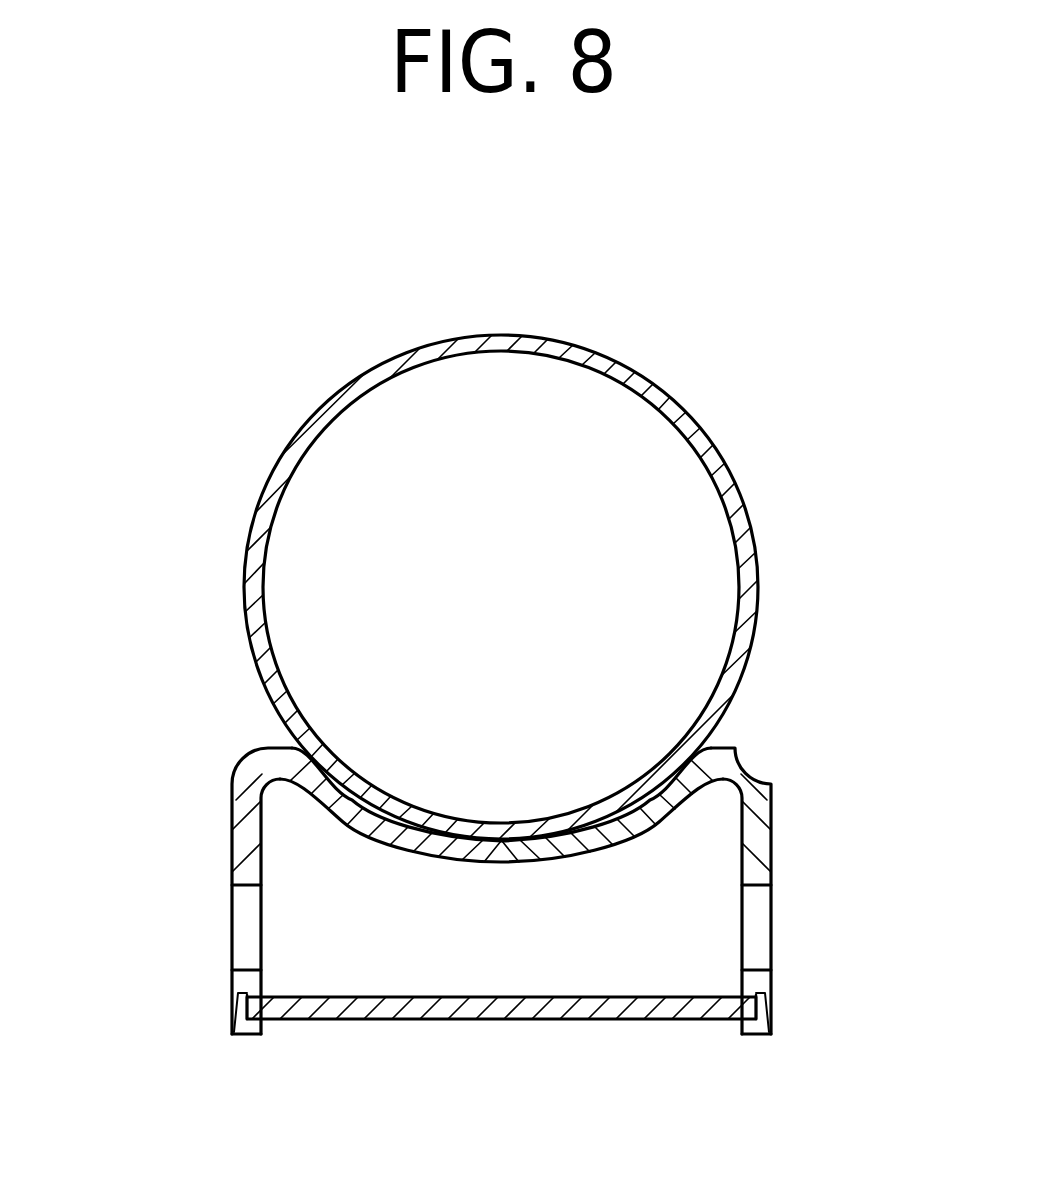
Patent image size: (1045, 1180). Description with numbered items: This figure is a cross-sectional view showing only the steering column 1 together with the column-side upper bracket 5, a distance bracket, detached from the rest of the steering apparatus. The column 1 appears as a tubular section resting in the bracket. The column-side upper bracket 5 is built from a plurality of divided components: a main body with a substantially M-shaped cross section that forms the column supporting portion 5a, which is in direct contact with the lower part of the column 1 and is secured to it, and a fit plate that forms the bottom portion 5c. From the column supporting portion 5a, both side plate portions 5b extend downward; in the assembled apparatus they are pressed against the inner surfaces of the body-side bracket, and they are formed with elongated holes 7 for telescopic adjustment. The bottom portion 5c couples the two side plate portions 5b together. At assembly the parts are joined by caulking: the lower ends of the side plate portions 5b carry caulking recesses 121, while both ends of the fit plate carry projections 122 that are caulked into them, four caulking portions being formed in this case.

The column 1 is at (263, 487).
The column-side upper bracket 5 is at (489, 913).
The column supporting portion 5a is at (722, 750).
The side plate portions 5b is at (232, 822).
The bottom portion 5c is at (511, 1021).
The elongated holes for telescopic adjustment 7 is at (247, 897).
The caulking recesses 121 is at (230, 1022).
The projections for caulking 122 is at (253, 1023).